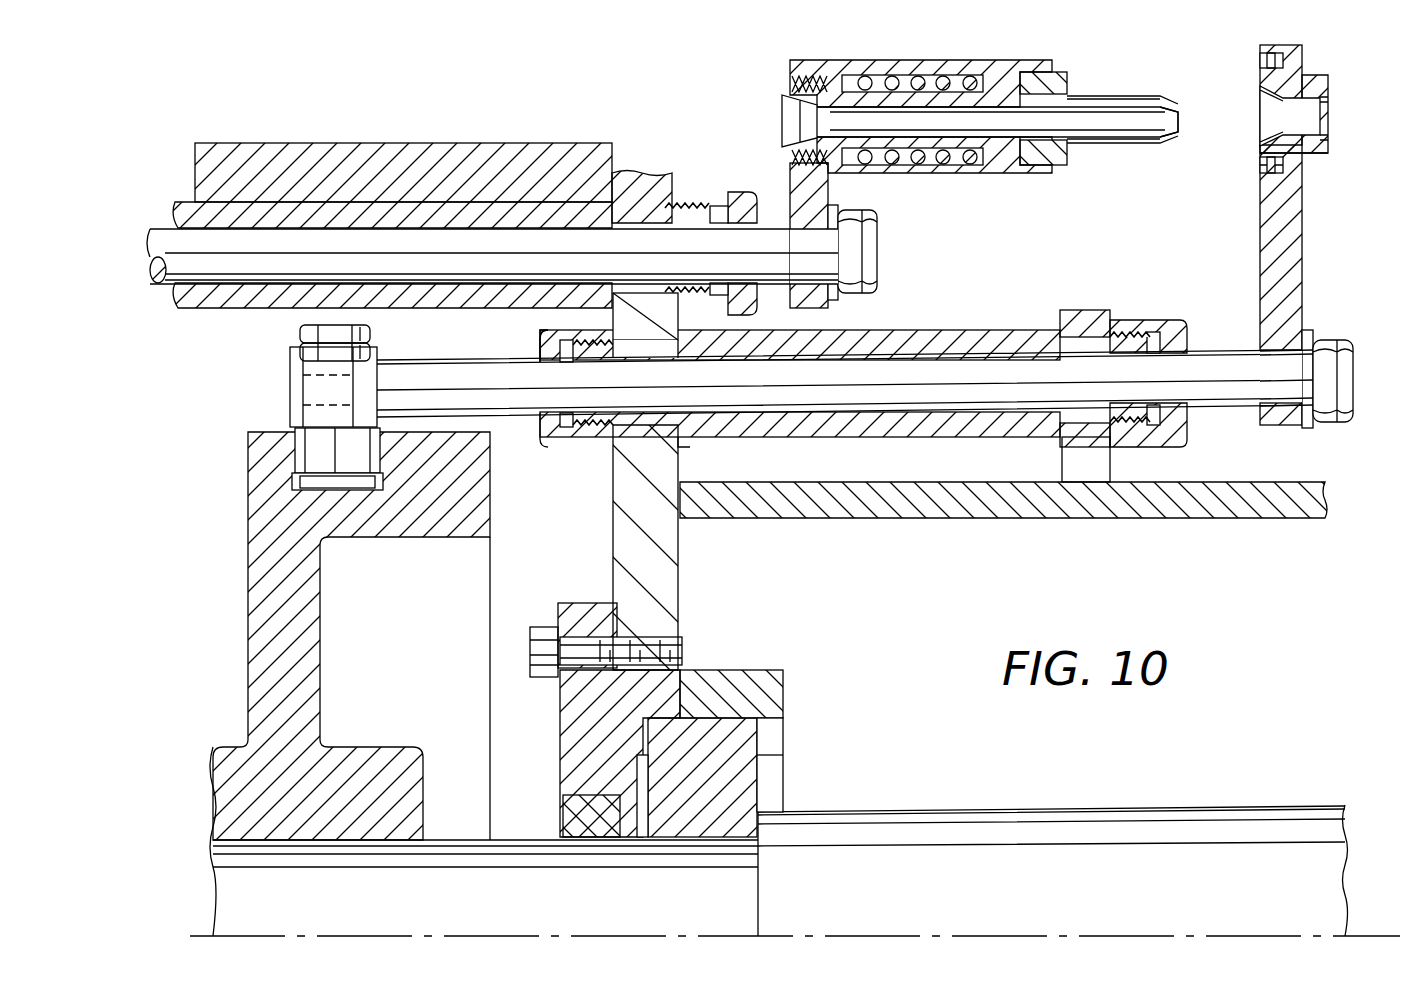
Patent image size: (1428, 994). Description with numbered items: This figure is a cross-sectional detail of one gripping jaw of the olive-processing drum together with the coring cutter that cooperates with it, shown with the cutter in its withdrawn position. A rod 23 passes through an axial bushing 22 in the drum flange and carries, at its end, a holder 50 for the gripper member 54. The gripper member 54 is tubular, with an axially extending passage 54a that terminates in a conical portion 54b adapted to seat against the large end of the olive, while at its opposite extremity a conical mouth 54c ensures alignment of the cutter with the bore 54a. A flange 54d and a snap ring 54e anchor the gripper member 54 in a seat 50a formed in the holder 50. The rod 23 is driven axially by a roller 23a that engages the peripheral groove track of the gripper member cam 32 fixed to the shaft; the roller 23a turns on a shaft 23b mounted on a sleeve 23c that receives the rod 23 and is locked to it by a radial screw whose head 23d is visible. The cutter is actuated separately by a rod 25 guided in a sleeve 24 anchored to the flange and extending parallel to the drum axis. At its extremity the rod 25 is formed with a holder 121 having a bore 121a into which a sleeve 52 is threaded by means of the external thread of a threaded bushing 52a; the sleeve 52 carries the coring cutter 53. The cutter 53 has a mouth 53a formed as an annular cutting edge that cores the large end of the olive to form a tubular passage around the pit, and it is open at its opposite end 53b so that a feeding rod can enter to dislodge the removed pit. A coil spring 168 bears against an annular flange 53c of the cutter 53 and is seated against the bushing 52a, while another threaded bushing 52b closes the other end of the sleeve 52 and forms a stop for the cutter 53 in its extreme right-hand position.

The axial bushing 22 is at (905, 432).
The rod 23 is at (832, 392).
The roller 23a is at (372, 465).
The shaft 23b is at (318, 492).
The sleeve 23c is at (303, 385).
The screw head 23d is at (372, 342).
The sleeve 24 is at (196, 300).
The rod 25 is at (196, 226).
The gripper member cam 32 is at (258, 628).
The holder 50 is at (1303, 262).
The seat 50a is at (1300, 58).
The sleeve 52 is at (915, 170).
The threaded bushing 52a is at (793, 82).
The threaded bushing 52b is at (1065, 78).
The cutter 53 is at (1100, 140).
The mouth 53a is at (1200, 78).
The opposite end 53b is at (783, 120).
The annular flange 53c is at (1012, 170).
The gripper member 54 is at (1263, 95).
The axially extending passage 54a is at (1328, 102).
The conical portion 54b is at (1328, 133).
The conical mouth 54c is at (1262, 145).
The flange 54d is at (1300, 187).
The snap ring 54e is at (1270, 175).
The holder 121 is at (822, 188).
The bore 121a is at (792, 158).
The coil spring 168 is at (950, 165).